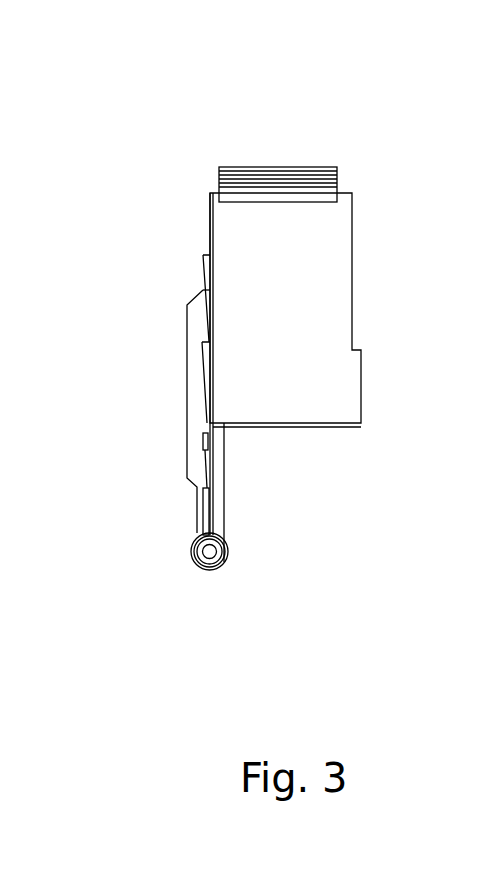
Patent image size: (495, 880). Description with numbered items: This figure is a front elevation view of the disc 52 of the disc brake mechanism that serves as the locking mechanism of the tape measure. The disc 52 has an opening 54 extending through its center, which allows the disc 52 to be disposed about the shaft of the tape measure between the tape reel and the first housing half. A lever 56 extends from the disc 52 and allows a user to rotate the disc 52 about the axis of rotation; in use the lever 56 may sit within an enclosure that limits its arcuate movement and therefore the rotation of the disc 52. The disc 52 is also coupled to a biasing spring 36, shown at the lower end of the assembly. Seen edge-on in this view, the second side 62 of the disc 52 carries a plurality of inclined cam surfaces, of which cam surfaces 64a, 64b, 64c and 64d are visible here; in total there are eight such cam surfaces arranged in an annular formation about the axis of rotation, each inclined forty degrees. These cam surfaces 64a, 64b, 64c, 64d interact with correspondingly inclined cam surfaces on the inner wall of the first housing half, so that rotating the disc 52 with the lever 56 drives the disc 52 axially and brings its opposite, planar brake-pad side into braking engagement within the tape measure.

The biasing spring 36 is at (227, 560).
The disc 52 is at (210, 193).
The opening 54 is at (196, 299).
The lever 56 is at (292, 167).
The second side 62 is at (210, 423).
The inclined cam surface 64a is at (210, 520).
The inclined cam surface 64b is at (210, 465).
The inclined cam surface 64c is at (207, 365).
The inclined cam surface 64d is at (207, 282).